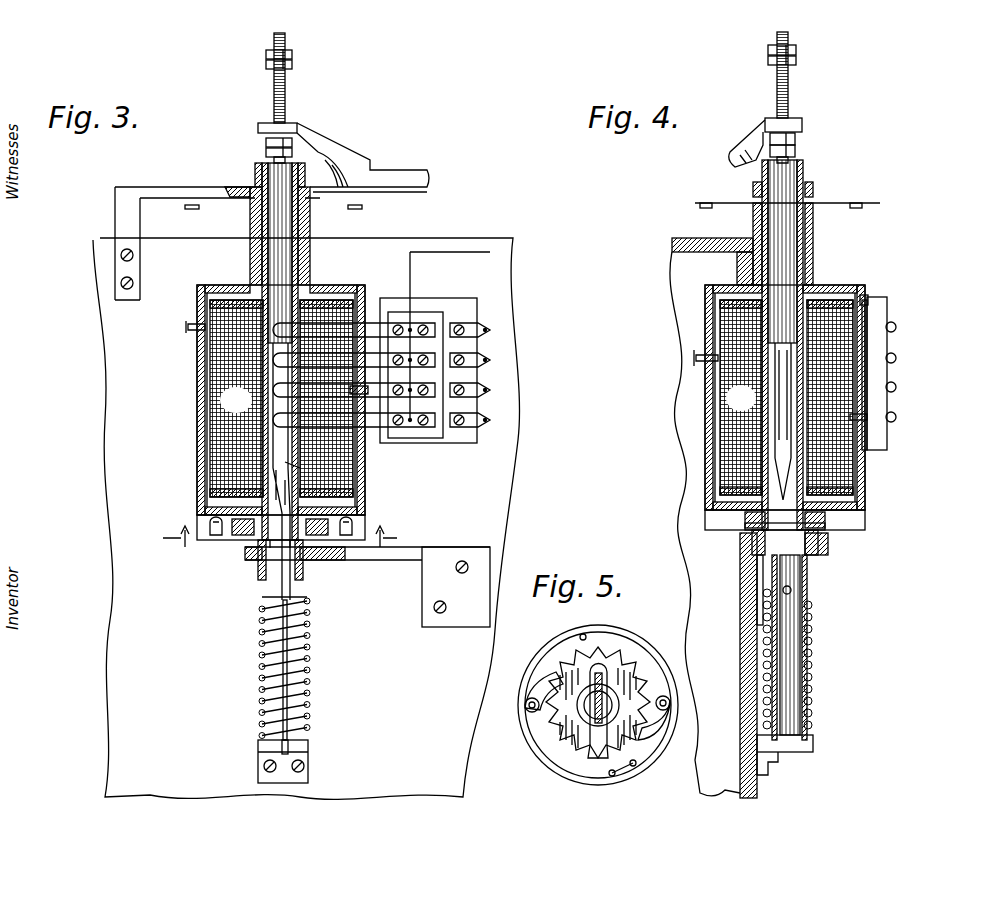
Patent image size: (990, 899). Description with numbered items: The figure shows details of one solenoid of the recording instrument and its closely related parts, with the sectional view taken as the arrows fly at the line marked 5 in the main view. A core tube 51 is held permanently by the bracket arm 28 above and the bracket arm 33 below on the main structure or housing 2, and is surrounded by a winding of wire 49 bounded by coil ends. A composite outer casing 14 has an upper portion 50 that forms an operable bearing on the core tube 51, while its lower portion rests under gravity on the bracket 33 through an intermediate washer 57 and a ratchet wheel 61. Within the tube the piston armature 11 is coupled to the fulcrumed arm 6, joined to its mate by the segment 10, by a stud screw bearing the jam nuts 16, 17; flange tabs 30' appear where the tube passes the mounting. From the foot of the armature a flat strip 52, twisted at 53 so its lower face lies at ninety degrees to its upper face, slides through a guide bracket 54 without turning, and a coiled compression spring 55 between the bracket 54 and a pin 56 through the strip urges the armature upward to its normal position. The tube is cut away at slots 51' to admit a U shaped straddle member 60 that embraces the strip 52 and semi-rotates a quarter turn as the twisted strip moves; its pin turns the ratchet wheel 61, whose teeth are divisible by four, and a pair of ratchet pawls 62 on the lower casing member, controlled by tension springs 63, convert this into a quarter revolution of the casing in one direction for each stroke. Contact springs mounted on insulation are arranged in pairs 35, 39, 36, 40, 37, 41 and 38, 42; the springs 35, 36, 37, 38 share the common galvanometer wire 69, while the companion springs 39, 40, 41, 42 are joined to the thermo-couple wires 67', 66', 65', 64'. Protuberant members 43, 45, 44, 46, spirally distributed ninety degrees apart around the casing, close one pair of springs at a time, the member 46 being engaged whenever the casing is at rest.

In FIG. 3, the housing 2 is at (480, 272).
In FIG. 4, the housing 2 is at (672, 243).
In FIG. 3, the calibrated scale 5 is at (280, 536).
In FIG. 3, the arm 6 is at (340, 150).
In FIG. 4, the arm 6 is at (802, 125).
In FIG. 3, the segment 10 is at (368, 191).
In FIG. 3, the piston armature 11 is at (278, 268).
In FIG. 4, the piston armature 11 is at (785, 265).
In FIG. 3, the solenoid casing 14 is at (205, 443).
In FIG. 4, the solenoid casing 14 is at (710, 456).
In FIG. 5, the solenoid casing 14 is at (613, 636).
In FIG. 3, the jam-nut 16 is at (265, 63).
In FIG. 4, the jam-nut 16 is at (797, 61).
In FIG. 3, the jam-nut 17 is at (265, 143).
In FIG. 4, the jam-nut 17 is at (797, 147).
In FIG. 3, the bracket arm 28 is at (175, 190).
In FIG. 4, the bracket arm 28 is at (813, 188).
In FIG. 3, the flange tabs 30' is at (287, 217).
In FIG. 4, the flange tabs 30' is at (783, 205).
In FIG. 3, the bracket arm 33 is at (382, 552).
In FIG. 4, the bracket arm 33 is at (830, 548).
In FIG. 3, the contact spring 35 is at (354, 331).
In FIG. 4, the contact spring 35 is at (897, 327).
In FIG. 3, the contact spring 36 is at (354, 361).
In FIG. 4, the contact spring 36 is at (897, 358).
In FIG. 3, the contact spring 37 is at (354, 390).
In FIG. 4, the contact spring 37 is at (897, 387).
In FIG. 3, the contact spring 38 is at (354, 421).
In FIG. 4, the contact spring 38 is at (897, 416).
In FIG. 3, the companion contact spring 39 is at (470, 330).
In FIG. 3, the companion contact spring 40 is at (470, 360).
In FIG. 3, the companion contact spring 41 is at (470, 390).
In FIG. 3, the companion contact spring 42 is at (470, 420).
In FIG. 3, the protuberant member 43 is at (184, 327).
In FIG. 4, the protuberant member 44 is at (700, 356).
In FIG. 3, the protuberant member 45 is at (368, 393).
In FIG. 4, the protuberant member 46 is at (890, 430).
In FIG. 3, the winding of wire 49 is at (281, 398).
In FIG. 4, the winding of wire 49 is at (786, 397).
In FIG. 3, the upper portion of casing 50 is at (250, 229).
In FIG. 4, the upper portion of casing 50 is at (813, 230).
In FIG. 3, the core tube 51 is at (249, 351).
In FIG. 4, the core tube 51 is at (828, 450).
In FIG. 5, the core tube 51 is at (623, 702).
In FIG. 5, the cut-away slot 51' is at (597, 706).
In FIG. 3, the flat strip 52 is at (340, 473).
In FIG. 4, the flat strip 52 is at (866, 300).
In FIG. 5, the flat strip 52 is at (592, 720).
In FIG. 3, the twist 53 is at (205, 508).
In FIG. 4, the twist 53 is at (862, 500).
In FIG. 3, the guide-bracket 54 is at (308, 745).
In FIG. 4, the guide-bracket 54 is at (815, 750).
In FIG. 3, the compression spring 55 is at (306, 660).
In FIG. 4, the compression spring 55 is at (813, 648).
In FIG. 3, the pin 56 is at (268, 602).
In FIG. 4, the pin 56 is at (792, 590).
In FIG. 3, the washer 57 is at (258, 562).
In FIG. 4, the washer 57 is at (852, 538).
In FIG. 3, the U-shaped straddle member 60 is at (290, 547).
In FIG. 4, the U-shaped straddle member 60 is at (832, 530).
In FIG. 5, the U-shaped straddle member 60 is at (598, 664).
In FIG. 3, the ratchet wheel 61 is at (246, 540).
In FIG. 4, the ratchet wheel 61 is at (710, 517).
In FIG. 5, the ratchet wheel 61 is at (618, 688).
In FIG. 3, the ratchet-pawl 62 is at (212, 540).
In FIG. 5, the ratchet-pawl 62 is at (534, 713).
In FIG. 5, the tension spring 63 is at (530, 673).
In FIG. 3, the wire 64' is at (534, 415).
In FIG. 3, the wire 65' is at (534, 385).
In FIG. 3, the wire 66' is at (534, 354).
In FIG. 3, the wire 67' is at (534, 324).
In FIG. 3, the circuit wire 69 is at (428, 252).